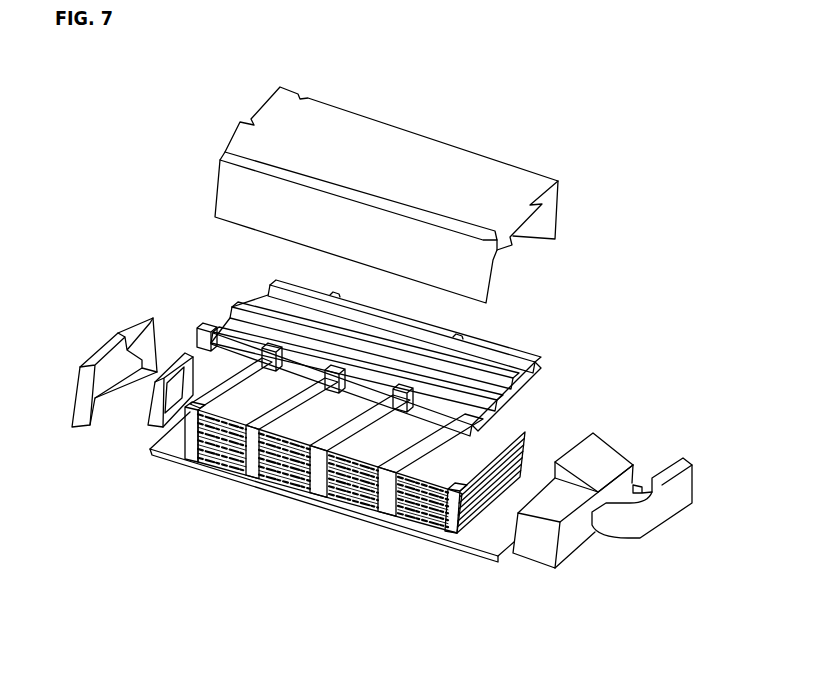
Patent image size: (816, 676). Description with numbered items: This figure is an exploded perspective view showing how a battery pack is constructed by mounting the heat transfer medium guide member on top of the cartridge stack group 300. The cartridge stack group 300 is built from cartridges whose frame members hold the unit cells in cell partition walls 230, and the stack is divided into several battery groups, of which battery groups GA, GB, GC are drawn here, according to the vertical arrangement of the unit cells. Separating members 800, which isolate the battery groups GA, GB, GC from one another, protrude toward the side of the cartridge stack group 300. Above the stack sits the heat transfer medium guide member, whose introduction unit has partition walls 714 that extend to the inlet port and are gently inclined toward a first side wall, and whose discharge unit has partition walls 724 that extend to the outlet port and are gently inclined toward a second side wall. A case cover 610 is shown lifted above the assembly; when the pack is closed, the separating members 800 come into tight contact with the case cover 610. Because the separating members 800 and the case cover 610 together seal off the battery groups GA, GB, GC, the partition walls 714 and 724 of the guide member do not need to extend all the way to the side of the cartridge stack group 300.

The case cover 610 is at (562, 192).
The partition walls of the introduction unit 714 is at (517, 355).
The partition walls of the discharge unit 724 is at (197, 330).
The cartridge stack group 300 is at (153, 444).
The battery group GA is at (208, 472).
The battery group GB is at (277, 493).
The battery group GC is at (327, 505).
The separating members 800 is at (377, 520).
The cell partition walls 230 is at (418, 527).